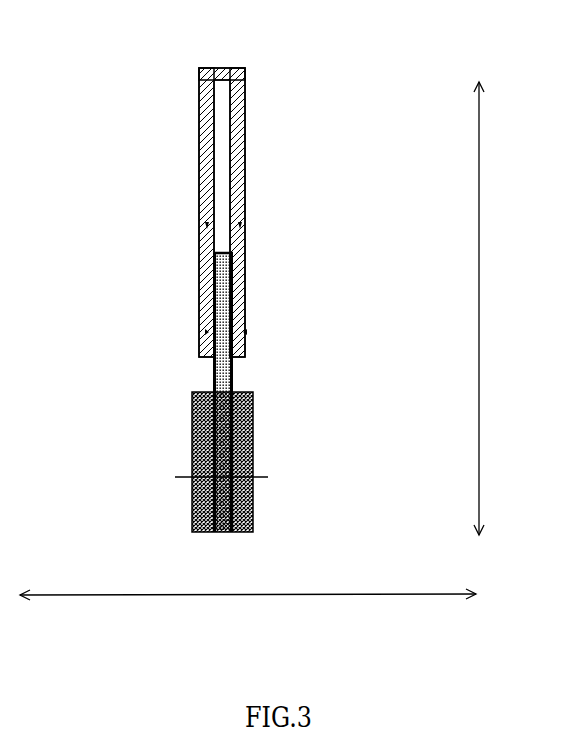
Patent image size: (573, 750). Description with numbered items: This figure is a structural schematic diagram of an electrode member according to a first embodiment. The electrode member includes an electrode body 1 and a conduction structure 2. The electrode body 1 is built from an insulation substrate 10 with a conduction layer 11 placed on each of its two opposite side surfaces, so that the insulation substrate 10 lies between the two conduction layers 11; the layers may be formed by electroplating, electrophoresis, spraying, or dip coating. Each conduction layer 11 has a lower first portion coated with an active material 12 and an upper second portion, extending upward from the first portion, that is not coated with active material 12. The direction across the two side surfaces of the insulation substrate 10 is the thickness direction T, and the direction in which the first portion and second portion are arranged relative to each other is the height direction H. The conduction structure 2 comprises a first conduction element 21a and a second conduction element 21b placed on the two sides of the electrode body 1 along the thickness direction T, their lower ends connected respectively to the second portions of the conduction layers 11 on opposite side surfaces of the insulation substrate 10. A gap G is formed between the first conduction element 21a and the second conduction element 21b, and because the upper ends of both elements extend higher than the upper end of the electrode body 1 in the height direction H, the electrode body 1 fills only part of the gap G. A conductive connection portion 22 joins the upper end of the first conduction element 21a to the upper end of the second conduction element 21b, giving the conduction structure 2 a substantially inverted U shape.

The electrode body 1 is at (211, 392).
The conduction structure 2 is at (247, 88).
The insulation substrate 10 is at (237, 317).
The conduction layer 11 is at (210, 320).
The active material 12 is at (192, 402).
The first conduction element 21a is at (205, 120).
The second conduction element 21b is at (242, 125).
The conductive connection portion 22 is at (225, 78).
The gap G is at (222, 207).
The height direction H is at (498, 308).
The thickness direction T is at (248, 581).